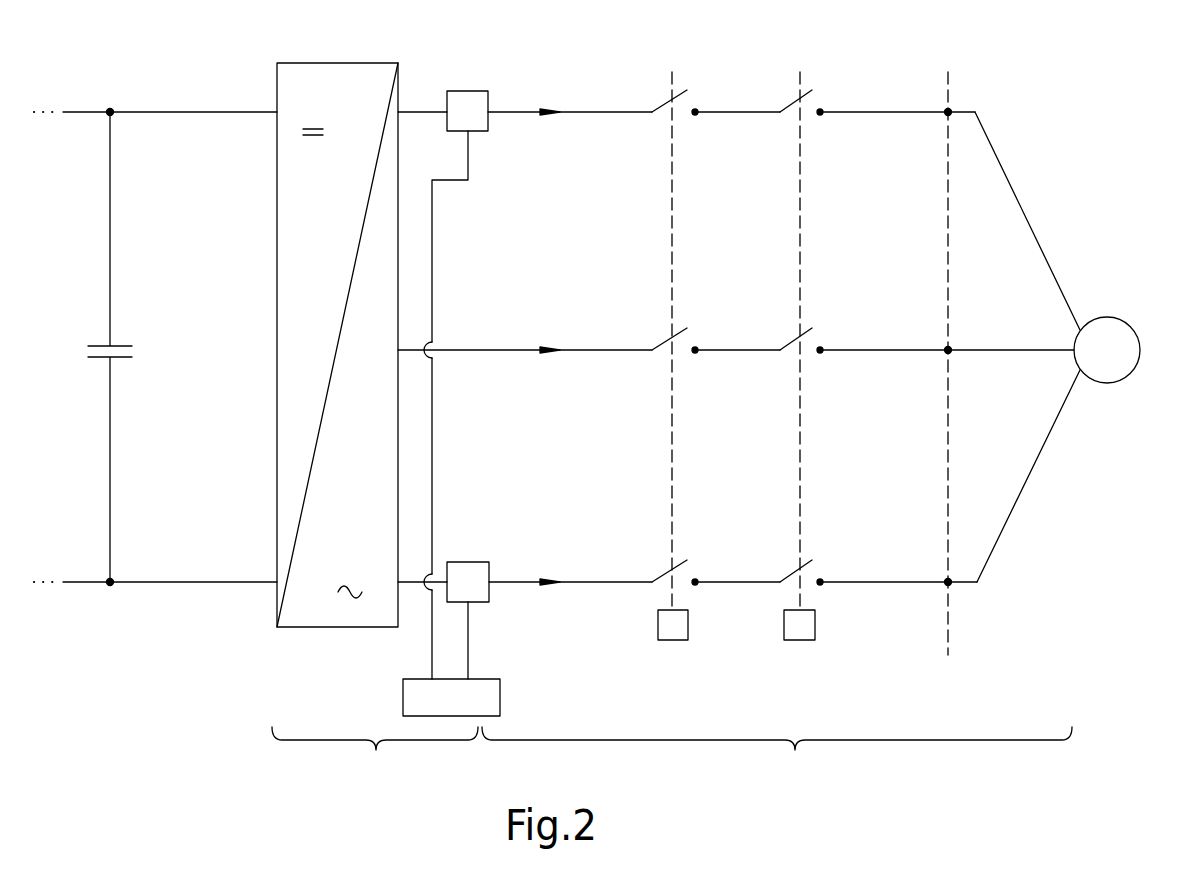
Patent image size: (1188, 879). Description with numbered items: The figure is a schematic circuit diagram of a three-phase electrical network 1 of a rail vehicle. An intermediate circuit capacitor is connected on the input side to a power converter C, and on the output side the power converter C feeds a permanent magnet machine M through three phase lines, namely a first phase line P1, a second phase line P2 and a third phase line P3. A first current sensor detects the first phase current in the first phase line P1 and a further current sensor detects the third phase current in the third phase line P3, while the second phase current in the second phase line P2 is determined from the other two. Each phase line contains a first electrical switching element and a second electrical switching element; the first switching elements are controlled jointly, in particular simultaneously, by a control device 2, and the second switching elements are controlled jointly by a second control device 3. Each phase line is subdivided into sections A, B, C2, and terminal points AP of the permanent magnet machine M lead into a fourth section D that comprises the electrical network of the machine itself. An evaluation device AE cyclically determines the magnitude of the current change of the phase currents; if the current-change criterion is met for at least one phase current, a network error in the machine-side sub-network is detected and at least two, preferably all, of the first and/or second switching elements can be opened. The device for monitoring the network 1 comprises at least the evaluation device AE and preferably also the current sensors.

The three-phase electrical network 1 is at (173, 676).
The control device 2 is at (672, 641).
The second control device 3 is at (798, 641).
The power converter C is at (330, 628).
The first phase line P1 is at (590, 109).
The second phase line P2 is at (582, 348).
The third phase line P3 is at (586, 580).
The terminal points AP is at (950, 108).
The permanent magnet machine M is at (1128, 326).
The evaluation device AE is at (500, 690).
The section A is at (593, 42).
The section B is at (764, 42).
The section C C2 is at (908, 42).
The fourth section D is at (1018, 42).